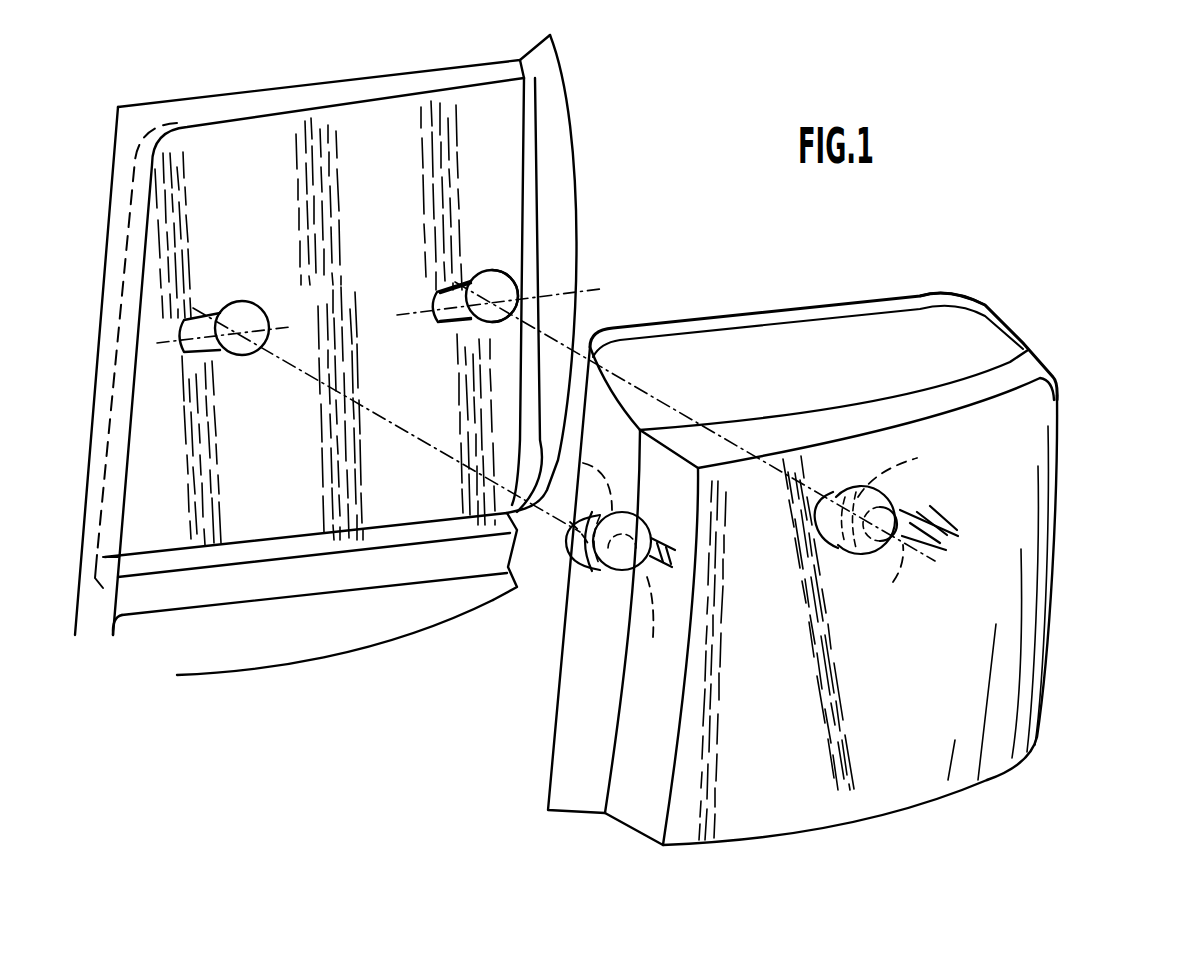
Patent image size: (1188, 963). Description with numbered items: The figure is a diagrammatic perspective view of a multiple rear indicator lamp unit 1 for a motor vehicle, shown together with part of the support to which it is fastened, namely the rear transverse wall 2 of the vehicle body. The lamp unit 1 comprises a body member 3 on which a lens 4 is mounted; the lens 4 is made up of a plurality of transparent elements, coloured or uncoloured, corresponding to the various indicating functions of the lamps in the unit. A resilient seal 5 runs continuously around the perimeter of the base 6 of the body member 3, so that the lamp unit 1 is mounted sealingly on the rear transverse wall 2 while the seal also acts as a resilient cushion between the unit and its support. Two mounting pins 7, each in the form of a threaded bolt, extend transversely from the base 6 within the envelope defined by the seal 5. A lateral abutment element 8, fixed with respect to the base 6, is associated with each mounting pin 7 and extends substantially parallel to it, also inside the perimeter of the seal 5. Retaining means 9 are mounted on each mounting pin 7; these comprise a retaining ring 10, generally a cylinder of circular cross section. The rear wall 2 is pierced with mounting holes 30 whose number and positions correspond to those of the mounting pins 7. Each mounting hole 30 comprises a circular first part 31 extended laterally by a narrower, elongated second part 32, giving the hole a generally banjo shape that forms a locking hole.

The multiple rear indicator lamp unit 1 is at (832, 524).
The rear transverse wall 2 is at (168, 218).
The body member 3 is at (922, 302).
The lens 4 is at (1010, 647).
The resilient seal 5 is at (972, 304).
The base 6 is at (821, 300).
The mounting pin 7 is at (570, 522).
The lateral abutment element 8 is at (925, 510).
The retaining means 9 is at (587, 463).
The retaining ring 10 is at (585, 563).
The mounting hole 30 is at (492, 293).
The first part 31 is at (507, 300).
The second part 32 is at (451, 289).